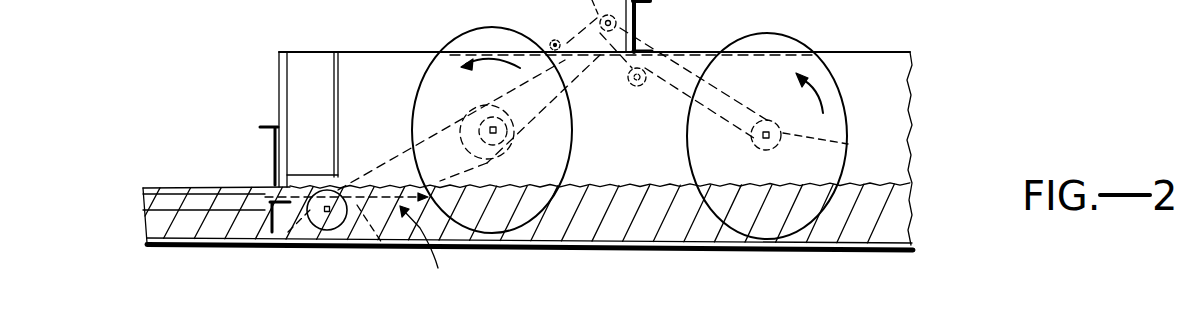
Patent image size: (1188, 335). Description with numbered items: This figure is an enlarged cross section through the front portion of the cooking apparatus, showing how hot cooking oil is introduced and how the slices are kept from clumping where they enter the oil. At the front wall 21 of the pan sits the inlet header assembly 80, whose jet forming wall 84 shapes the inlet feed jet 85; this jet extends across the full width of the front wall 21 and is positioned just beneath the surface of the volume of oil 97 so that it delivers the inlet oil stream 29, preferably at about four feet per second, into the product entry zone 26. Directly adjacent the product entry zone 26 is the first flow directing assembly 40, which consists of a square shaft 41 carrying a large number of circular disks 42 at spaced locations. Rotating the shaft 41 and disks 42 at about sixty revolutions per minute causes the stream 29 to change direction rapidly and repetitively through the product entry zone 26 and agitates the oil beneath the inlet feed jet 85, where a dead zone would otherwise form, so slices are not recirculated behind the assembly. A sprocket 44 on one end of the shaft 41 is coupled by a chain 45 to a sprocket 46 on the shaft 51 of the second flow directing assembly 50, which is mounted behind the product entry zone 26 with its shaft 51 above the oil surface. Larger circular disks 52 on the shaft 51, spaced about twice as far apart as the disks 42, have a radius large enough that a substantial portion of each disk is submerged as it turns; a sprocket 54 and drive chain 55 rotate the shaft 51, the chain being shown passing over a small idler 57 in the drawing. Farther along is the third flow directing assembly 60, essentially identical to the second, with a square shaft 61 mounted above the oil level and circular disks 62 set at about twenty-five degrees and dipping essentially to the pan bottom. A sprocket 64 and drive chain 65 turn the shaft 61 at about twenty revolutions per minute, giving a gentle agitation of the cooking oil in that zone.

The front wall 21 is at (283, 155).
The product entry zone 26 is at (434, 247).
The inlet oil stream 29 is at (594, 114).
The flow directing assembly 40 is at (345, 226).
The square shaft 41 is at (327, 216).
The circular disks 42 is at (313, 225).
The sprocket 44 is at (290, 233).
The web guide path 45 is at (383, 244).
The sprocket 46 is at (513, 145).
The flow directing assembly 50 is at (519, 243).
The shaft 51 is at (490, 128).
The circular disks 52 is at (530, 202).
The sprocket 54 is at (452, 119).
The drive chain 55 is at (583, 75).
The idler roller 57 is at (553, 38).
The flow directing and oil agitating assembly 60 is at (847, 107).
The square shaft 61 is at (760, 141).
The circular disks 62 is at (787, 43).
The sprocket 64 is at (848, 144).
The drive chain 65 is at (668, 45).
The inlet header assembly 80 is at (197, 180).
The jet forming wall 84 is at (265, 206).
The inlet feed jet 85 is at (276, 188).
The volume of oil 97 is at (893, 218).